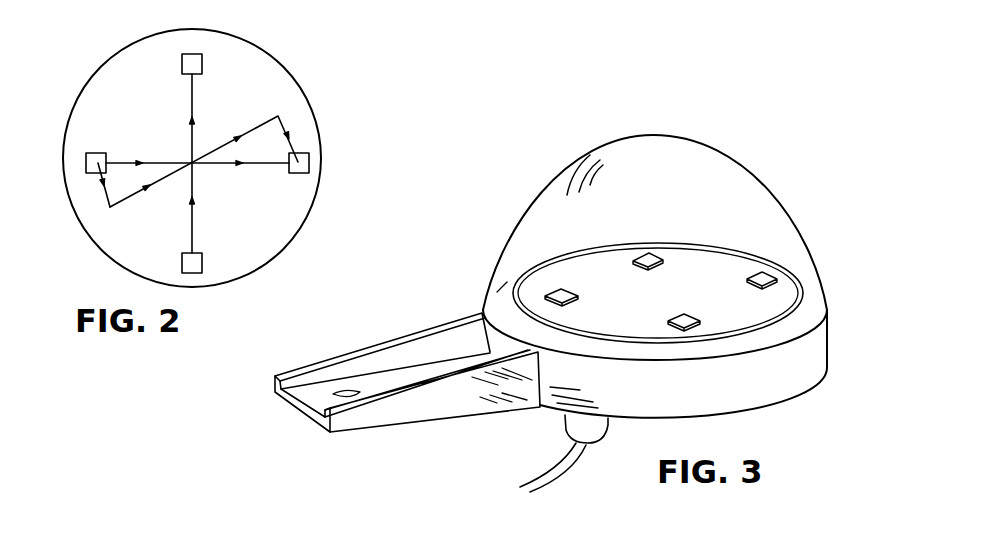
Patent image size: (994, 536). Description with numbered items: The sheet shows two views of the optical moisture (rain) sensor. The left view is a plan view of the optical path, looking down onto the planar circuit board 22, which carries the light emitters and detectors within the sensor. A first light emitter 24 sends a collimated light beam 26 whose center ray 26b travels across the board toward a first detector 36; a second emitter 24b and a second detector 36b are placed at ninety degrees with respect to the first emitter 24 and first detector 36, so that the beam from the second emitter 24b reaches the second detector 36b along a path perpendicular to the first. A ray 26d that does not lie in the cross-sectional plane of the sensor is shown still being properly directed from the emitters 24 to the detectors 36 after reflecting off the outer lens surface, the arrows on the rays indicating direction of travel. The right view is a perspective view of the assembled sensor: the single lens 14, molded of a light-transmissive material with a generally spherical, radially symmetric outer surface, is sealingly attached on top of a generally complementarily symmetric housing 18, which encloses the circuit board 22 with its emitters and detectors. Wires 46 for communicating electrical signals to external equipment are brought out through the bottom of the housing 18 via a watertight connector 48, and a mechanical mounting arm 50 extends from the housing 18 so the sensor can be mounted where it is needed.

In FIG. 3, the lens 14 is at (532, 200).
In FIG. 3, the housing 18 is at (822, 372).
In FIG. 2, the circuit board 22 is at (303, 88).
In FIG. 3, the circuit board 22 is at (770, 258).
In FIG. 2, the light emitter 24 is at (86, 162).
In FIG. 2, the second emitter 24b is at (182, 265).
In FIG. 2, the light beam 26 is at (100, 217).
In FIG. 2, the center ray 26b is at (167, 161).
In FIG. 2, the ray 26d is at (128, 197).
In FIG. 2, the detector 36 is at (310, 163).
In FIG. 2, the second detector 36b is at (193, 54).
In FIG. 3, the wires 46 is at (548, 474).
In FIG. 3, the watertight connector 48 is at (608, 424).
In FIG. 3, the mechanical mounting arm 50 is at (400, 338).